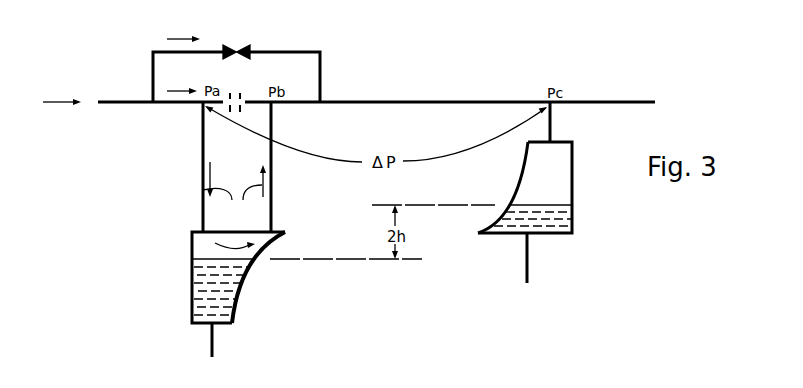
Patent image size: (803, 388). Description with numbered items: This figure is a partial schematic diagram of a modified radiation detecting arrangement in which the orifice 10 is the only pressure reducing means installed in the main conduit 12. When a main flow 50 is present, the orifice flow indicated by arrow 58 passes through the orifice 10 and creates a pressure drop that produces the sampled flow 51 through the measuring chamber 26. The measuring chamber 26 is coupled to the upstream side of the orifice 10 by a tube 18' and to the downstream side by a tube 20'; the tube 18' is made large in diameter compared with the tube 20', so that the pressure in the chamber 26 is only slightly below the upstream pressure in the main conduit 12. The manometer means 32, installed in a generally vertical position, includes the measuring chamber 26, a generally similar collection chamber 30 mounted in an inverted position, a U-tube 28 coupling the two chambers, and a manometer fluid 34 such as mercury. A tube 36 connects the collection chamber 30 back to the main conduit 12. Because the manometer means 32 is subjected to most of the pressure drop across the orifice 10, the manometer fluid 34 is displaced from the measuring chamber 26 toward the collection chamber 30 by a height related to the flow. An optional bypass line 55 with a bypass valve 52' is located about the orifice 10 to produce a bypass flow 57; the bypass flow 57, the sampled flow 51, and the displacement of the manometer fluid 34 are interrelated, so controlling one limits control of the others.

The orifice 10 is at (241, 95).
The main conduit 12 is at (382, 101).
The tube 18' is at (189, 167).
The tube 20' is at (285, 167).
The measuring chamber 26 is at (192, 247).
The U-tube 28 is at (526, 258).
The collection chamber 30 is at (573, 189).
The manometer means 32 is at (545, 234).
The manometer fluid 34 is at (233, 294).
The tube 36 is at (552, 125).
The main flow 50 is at (62, 86).
The sampled flow 51 is at (233, 247).
The bypass valve 52' is at (242, 36).
The bypass line 55 is at (285, 51).
The bypass flow 57 is at (178, 29).
The arrow 58 is at (179, 79).